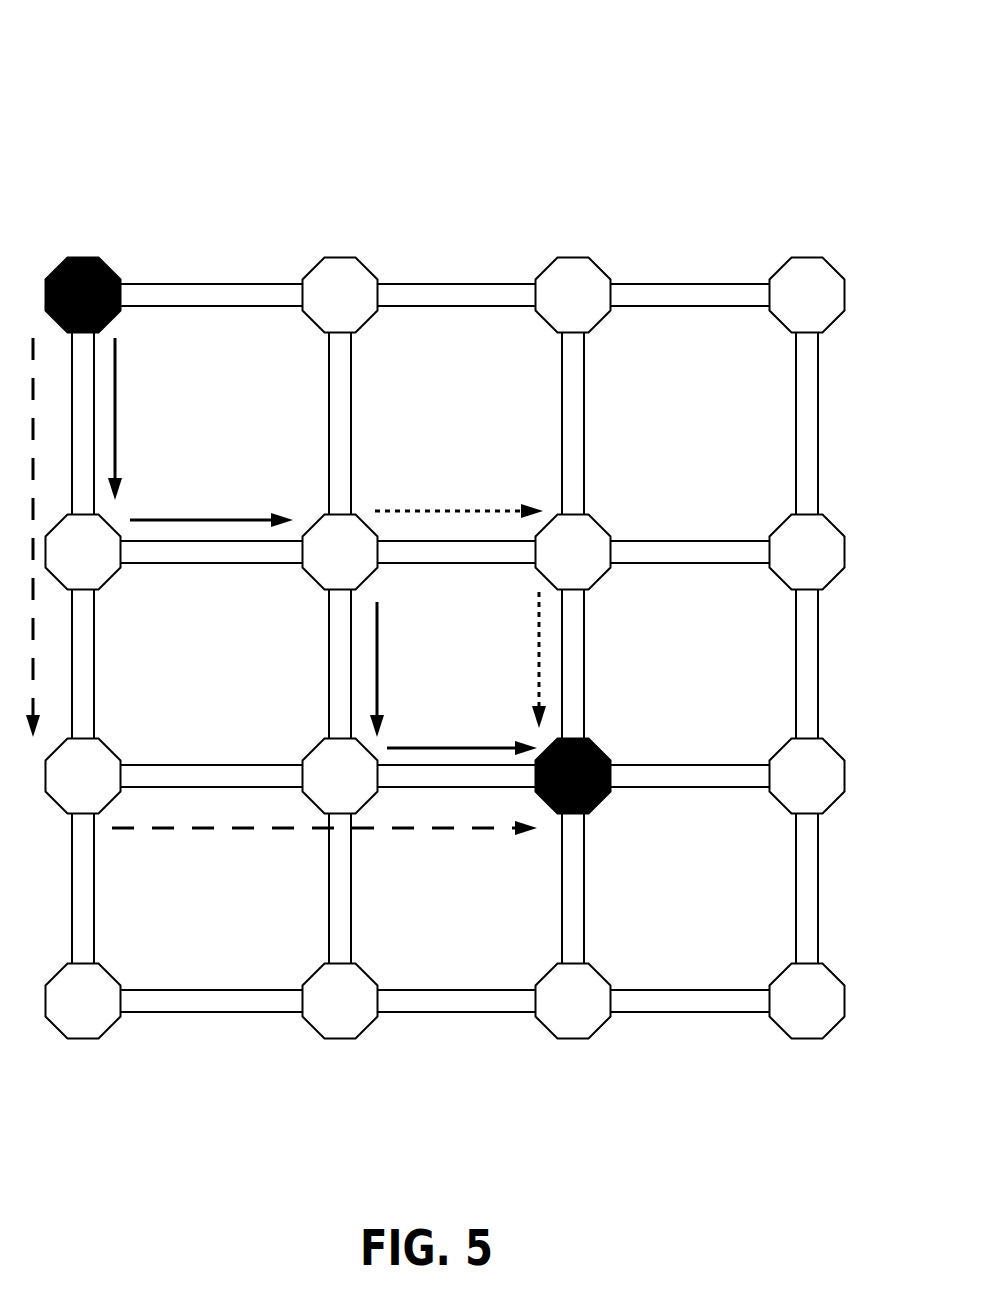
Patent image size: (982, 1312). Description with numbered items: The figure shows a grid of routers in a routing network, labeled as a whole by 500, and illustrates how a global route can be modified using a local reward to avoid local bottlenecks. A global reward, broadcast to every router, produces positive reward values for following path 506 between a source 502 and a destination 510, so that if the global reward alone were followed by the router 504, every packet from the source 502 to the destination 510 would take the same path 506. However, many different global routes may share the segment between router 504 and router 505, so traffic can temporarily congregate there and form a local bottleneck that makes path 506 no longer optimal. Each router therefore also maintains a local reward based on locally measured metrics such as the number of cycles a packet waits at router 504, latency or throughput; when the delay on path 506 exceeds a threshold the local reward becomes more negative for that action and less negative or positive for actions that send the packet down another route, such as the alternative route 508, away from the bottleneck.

The network topology / mesh of nodes 500 is at (765, 110).
The source 502 is at (83, 257).
The router 504 is at (320, 512).
The router 505 is at (312, 743).
The path 506 is at (378, 667).
The alternate routing path segment 508 is at (472, 510).
The destination 510 is at (603, 752).